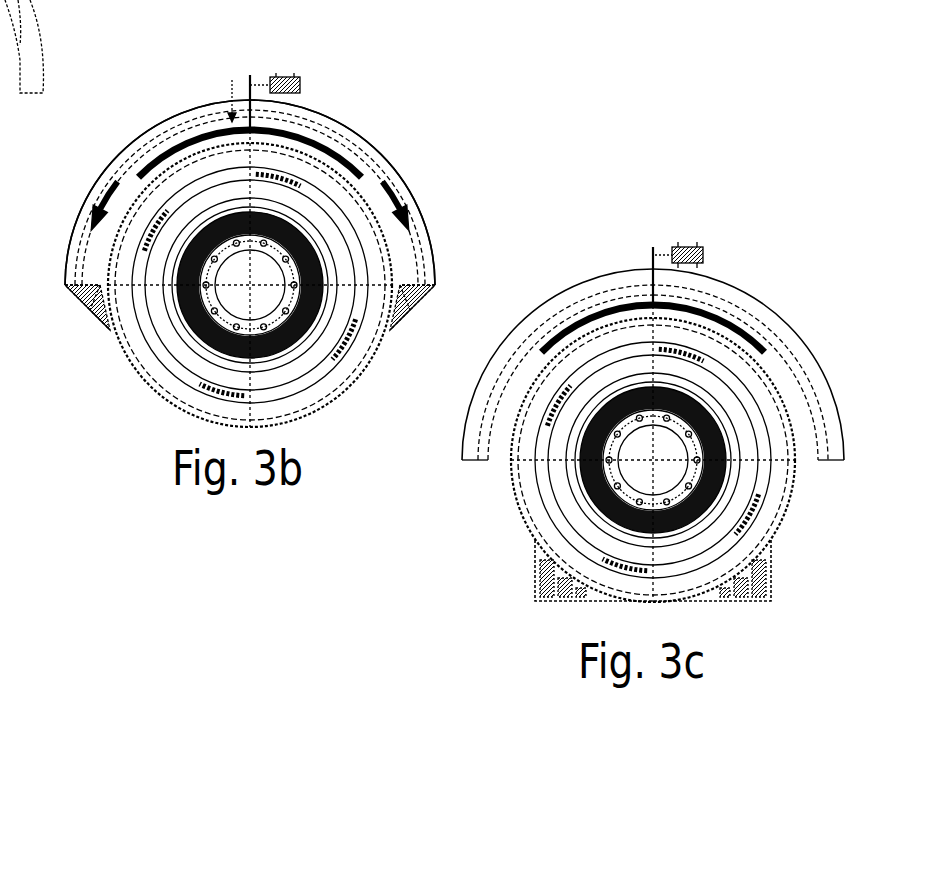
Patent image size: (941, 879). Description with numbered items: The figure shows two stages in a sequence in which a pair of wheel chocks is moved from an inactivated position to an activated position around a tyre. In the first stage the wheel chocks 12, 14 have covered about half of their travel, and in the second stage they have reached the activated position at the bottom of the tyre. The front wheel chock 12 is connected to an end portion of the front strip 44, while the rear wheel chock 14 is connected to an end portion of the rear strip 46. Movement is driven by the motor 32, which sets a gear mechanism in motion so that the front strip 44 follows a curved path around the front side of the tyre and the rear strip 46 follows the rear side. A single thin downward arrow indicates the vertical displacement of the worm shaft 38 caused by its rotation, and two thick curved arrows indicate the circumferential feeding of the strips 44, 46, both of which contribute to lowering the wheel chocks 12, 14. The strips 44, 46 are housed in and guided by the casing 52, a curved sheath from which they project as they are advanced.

In FIG. 3B, the front wheel chock 12 is at (93, 313).
In FIG. 3C, the front wheel chock 12 is at (535, 588).
In FIG. 3B, the rear wheel chock 14 is at (410, 313).
In FIG. 3C, the rear wheel chock 14 is at (771, 590).
In FIG. 3B, the motor 32 is at (287, 76).
In FIG. 3B, the worm shaft 38 is at (250, 76).
In FIG. 3B, the front strip 44 is at (127, 197).
In FIG. 3C, the front strip 44 is at (505, 487).
In FIG. 3B, the rear strip 46 is at (377, 200).
In FIG. 3C, the rear strip 46 is at (805, 485).
In FIG. 3B, the casing 52 is at (303, 140).
In FIG. 3C, the casing 52 is at (598, 310).